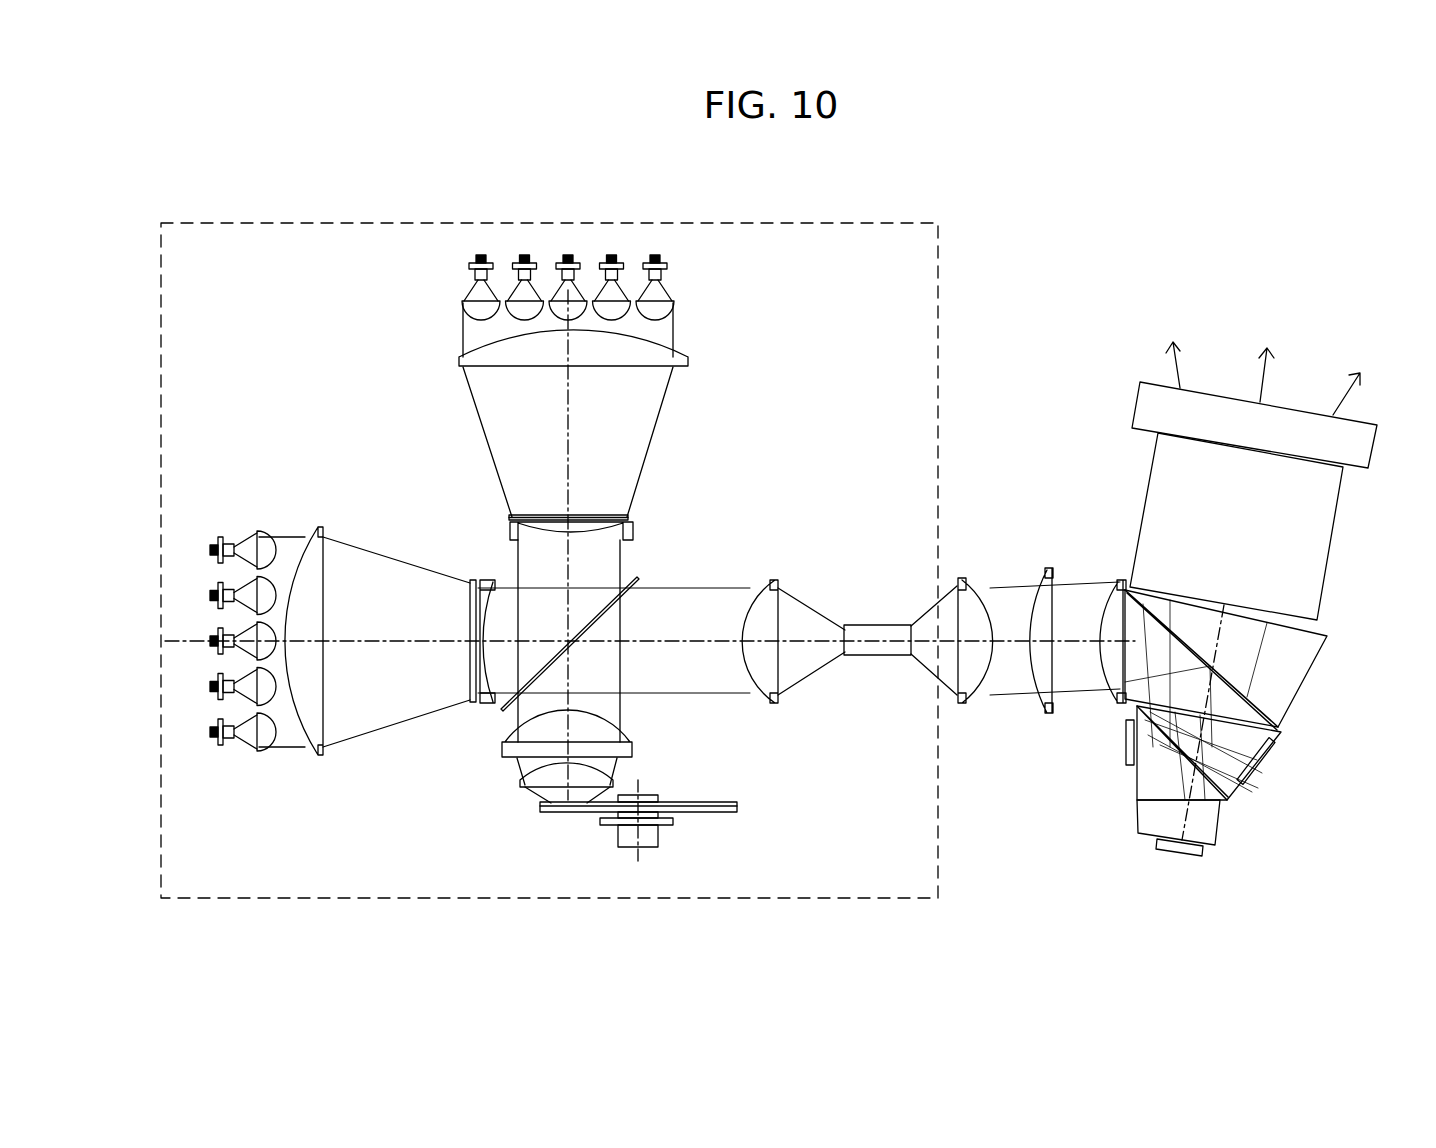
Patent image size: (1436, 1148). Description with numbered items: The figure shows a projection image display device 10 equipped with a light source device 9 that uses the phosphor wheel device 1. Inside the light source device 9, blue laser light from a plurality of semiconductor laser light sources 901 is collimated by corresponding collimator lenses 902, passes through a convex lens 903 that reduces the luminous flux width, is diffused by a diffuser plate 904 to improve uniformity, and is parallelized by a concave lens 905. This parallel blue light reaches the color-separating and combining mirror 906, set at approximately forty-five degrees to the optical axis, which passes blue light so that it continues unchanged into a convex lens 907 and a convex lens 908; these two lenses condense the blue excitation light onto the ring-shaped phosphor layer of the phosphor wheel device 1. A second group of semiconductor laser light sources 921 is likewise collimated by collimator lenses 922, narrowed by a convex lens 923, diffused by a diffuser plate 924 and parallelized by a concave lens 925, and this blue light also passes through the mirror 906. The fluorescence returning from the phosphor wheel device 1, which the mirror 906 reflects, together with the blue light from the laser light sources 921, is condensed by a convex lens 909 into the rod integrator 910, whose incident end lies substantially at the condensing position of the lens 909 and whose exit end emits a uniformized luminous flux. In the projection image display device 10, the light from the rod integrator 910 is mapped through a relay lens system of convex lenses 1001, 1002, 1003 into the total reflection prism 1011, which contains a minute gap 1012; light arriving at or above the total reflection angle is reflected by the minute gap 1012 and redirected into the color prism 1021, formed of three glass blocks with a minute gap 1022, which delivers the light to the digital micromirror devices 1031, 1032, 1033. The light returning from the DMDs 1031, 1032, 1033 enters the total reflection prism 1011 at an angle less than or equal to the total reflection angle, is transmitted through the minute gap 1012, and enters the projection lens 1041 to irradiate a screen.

The phosphor wheel device 1 is at (728, 815).
The light source device 9 is at (336, 207).
The projection image display device 10 is at (1186, 254).
The semiconductor laser light sources 901 is at (470, 270).
The collimator lenses 902 is at (466, 308).
The convex lens 903 is at (460, 361).
The diffuser plate 904 is at (510, 516).
The concave lens 905 is at (513, 528).
The color-separating and combining mirror 906 is at (503, 713).
The convex lens 907 is at (512, 752).
The convex lens 908 is at (525, 787).
The convex lens 909 is at (773, 584).
The rod integrator 910 is at (877, 657).
The semiconductor laser light sources 921 is at (223, 542).
The collimator lenses 922 is at (260, 747).
The convex lens 923 is at (317, 753).
The diffuser plate 924 is at (472, 700).
The concave lens 925 is at (481, 703).
The convex lens 1001 is at (963, 578).
The convex lens 1002 is at (1047, 703).
The convex lens 1003 is at (1120, 582).
The total reflection prism 1011 is at (1310, 638).
The minute gap 1012 is at (1257, 702).
The color prism 1021 is at (1150, 818).
The minute gap 1022 is at (1227, 800).
The digital micromirror device 1031 is at (1187, 852).
The digital micromirror device 1032 is at (1125, 757).
The digital micromirror device 1033 is at (1280, 753).
The projection lens 1041 is at (1195, 498).